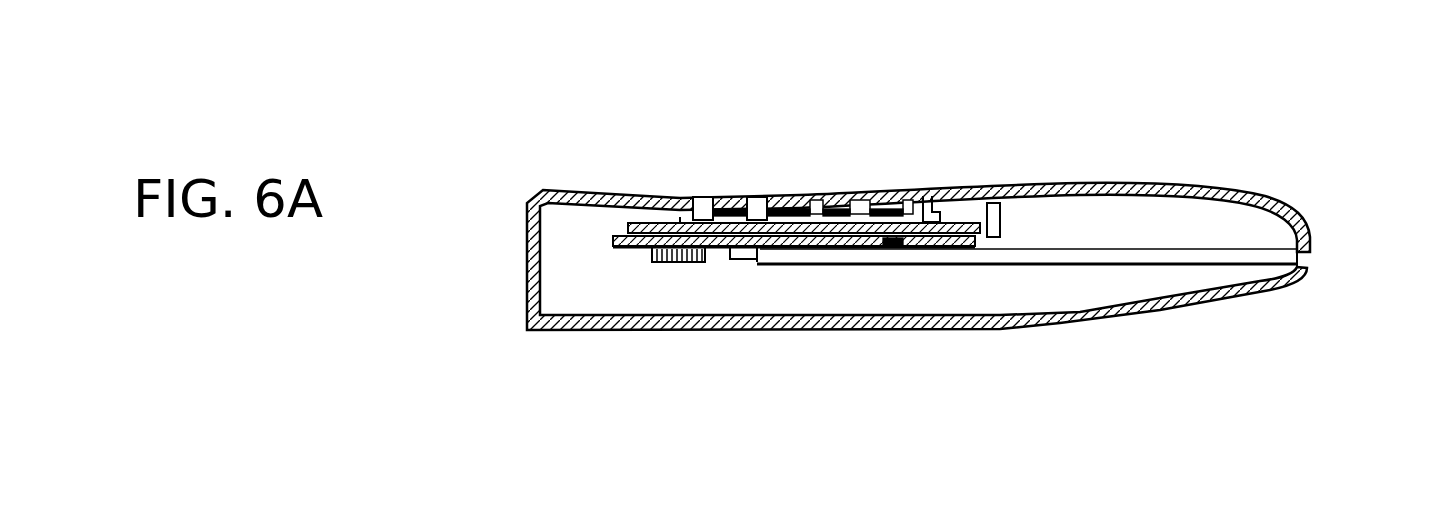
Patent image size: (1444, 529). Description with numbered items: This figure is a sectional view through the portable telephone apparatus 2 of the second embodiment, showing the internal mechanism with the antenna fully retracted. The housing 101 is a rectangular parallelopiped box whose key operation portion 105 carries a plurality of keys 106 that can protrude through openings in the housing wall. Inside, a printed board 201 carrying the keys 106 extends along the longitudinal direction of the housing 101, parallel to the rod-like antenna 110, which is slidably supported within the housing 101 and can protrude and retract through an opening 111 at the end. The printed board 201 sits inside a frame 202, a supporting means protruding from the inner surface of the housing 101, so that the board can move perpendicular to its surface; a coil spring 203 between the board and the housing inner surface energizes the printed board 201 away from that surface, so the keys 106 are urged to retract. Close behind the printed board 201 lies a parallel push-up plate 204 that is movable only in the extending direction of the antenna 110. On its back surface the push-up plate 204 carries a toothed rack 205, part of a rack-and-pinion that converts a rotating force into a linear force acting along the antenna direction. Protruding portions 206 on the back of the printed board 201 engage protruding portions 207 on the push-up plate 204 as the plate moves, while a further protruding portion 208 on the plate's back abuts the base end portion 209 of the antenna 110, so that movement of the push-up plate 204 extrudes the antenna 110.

The portable telephone apparatus 2 is at (655, 131).
The housing 101 is at (527, 257).
The key operation portion 105 is at (917, 166).
The keys 106 is at (754, 199).
The antenna 110 is at (1232, 248).
The opening 111 is at (1310, 262).
The printed board 201 is at (652, 217).
The frame 202 is at (1065, 186).
The coil spring 203 is at (810, 192).
The push-up plate 204 is at (800, 249).
The rack 205 is at (648, 263).
The protruding portions 206 is at (927, 200).
The protruding portions 207 is at (890, 264).
The protruding portion 208 is at (733, 260).
The base end portion 209 is at (753, 259).